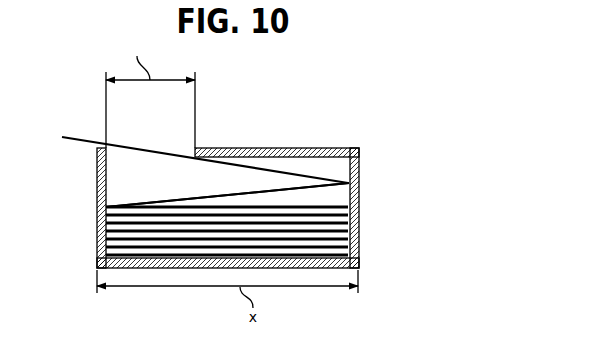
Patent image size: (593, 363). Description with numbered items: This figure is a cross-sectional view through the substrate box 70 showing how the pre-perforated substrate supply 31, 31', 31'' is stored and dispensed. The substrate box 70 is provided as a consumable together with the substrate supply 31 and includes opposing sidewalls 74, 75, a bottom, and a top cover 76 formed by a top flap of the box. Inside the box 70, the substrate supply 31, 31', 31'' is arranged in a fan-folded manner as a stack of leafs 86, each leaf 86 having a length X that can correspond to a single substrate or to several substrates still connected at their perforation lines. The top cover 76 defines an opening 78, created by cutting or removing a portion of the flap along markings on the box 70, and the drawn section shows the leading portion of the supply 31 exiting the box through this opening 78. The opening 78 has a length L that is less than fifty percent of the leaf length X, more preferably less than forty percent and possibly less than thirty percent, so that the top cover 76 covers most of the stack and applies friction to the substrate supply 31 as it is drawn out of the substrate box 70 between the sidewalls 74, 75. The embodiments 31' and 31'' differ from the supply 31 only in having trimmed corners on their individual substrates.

The substrate box 70 is at (363, 181).
The sidewall 74 is at (97, 232).
The sidewall 75 is at (359, 240).
The top cover 76 is at (260, 148).
The opening 78 is at (166, 137).
The pre-perforated substrate supply 31 is at (223, 152).
The pre-perforated substrate supply 31' is at (205, 172).
The pre-perforated substrate supply 31'' is at (205, 172).
The leaf 86 is at (191, 197).